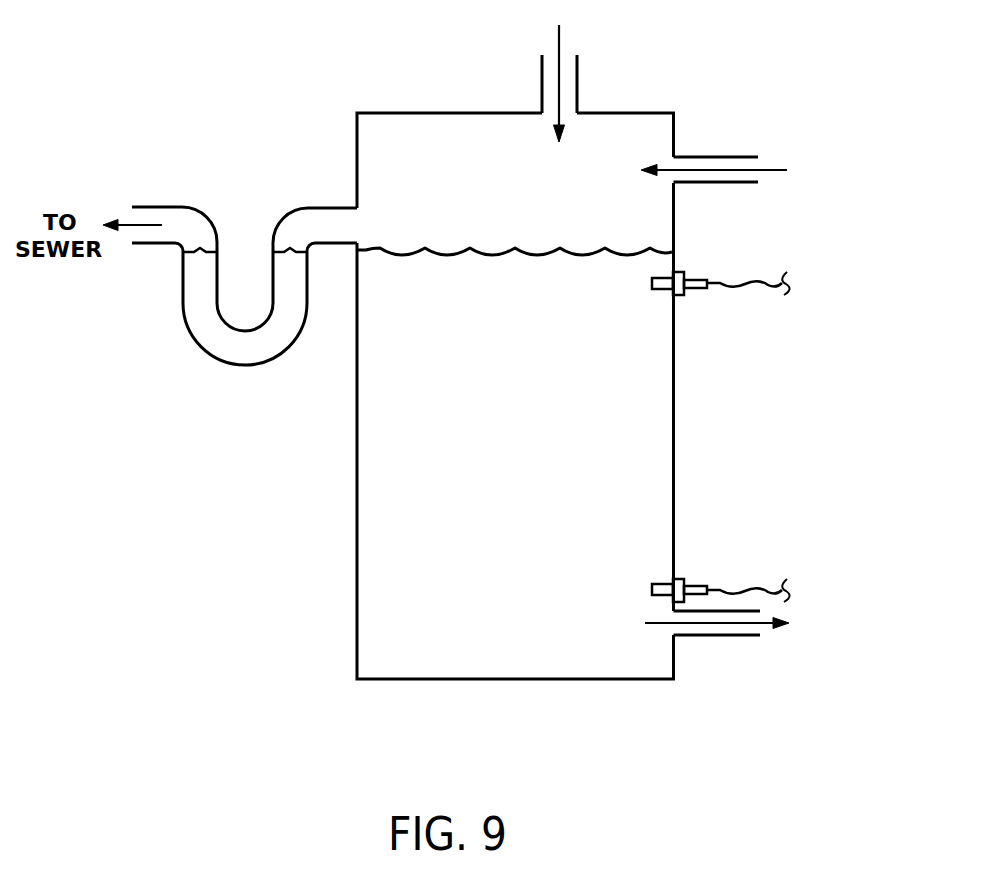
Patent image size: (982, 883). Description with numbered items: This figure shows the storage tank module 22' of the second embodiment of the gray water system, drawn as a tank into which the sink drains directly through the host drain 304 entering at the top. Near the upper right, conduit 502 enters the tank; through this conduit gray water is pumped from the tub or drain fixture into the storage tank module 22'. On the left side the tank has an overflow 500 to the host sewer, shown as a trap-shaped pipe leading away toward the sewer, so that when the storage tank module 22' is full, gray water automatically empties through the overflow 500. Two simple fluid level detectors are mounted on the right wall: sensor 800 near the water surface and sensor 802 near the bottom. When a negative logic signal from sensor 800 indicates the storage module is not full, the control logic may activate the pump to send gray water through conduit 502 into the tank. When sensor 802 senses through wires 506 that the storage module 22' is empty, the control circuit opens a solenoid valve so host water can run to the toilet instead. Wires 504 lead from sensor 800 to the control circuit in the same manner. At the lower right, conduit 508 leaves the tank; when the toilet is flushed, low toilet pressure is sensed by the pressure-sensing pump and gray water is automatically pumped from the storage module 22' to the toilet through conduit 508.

The storage tank module 22' is at (515, 418).
The host drain 304 is at (578, 86).
The conduit 502 is at (713, 157).
The overflow 500 is at (296, 208).
The sensor lead 504 is at (790, 280).
The sensor 800 is at (680, 296).
The sensor 802 is at (680, 578).
The wires 506 is at (790, 587).
The conduit 508 is at (713, 636).